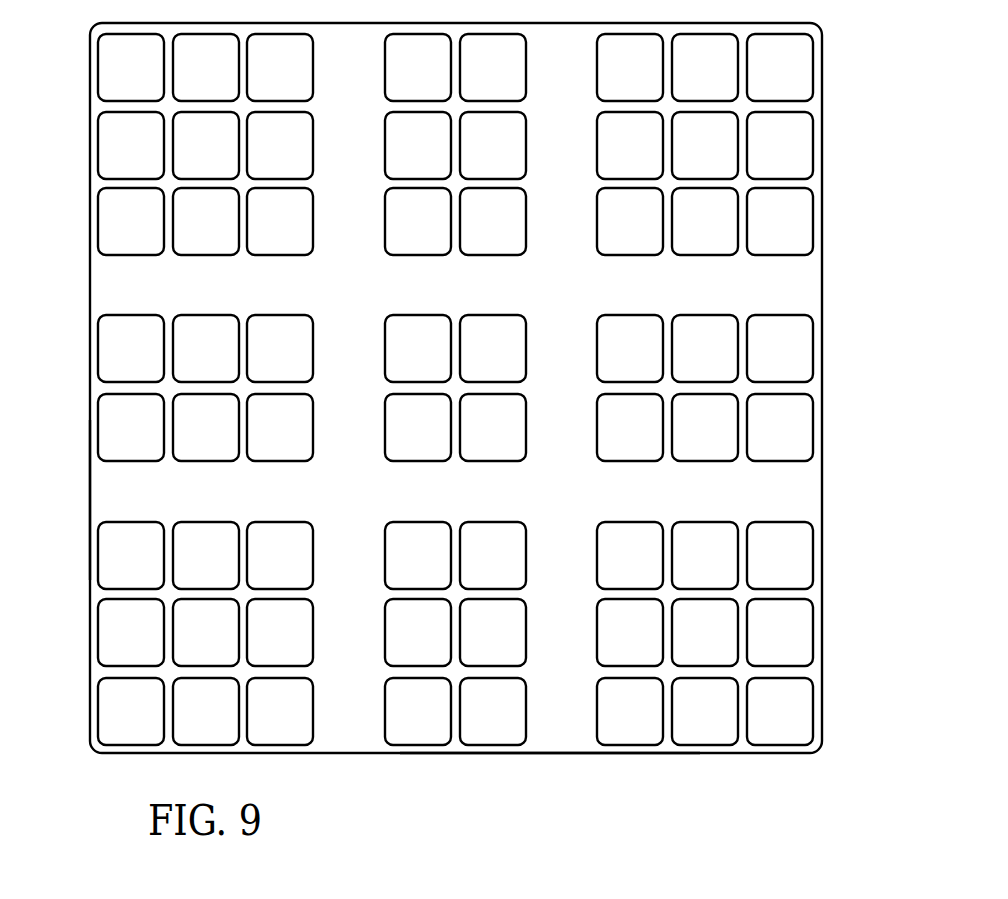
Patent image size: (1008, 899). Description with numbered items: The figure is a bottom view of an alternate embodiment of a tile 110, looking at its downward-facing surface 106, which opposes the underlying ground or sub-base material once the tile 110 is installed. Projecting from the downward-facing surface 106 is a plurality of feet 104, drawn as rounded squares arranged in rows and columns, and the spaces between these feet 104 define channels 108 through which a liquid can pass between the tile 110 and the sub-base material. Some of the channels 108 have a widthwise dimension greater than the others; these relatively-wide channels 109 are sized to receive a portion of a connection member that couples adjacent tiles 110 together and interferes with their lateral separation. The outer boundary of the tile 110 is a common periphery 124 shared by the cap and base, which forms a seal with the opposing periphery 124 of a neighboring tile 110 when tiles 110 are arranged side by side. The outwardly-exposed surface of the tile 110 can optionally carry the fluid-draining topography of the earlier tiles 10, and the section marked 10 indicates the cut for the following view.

The tiles 10 is at (77, 712).
The feet 104 is at (780, 335).
The downward-facing surface 106 is at (372, 300).
The channels 108 is at (810, 593).
The relatively-wide channels 109 is at (117, 494).
The tile 110 is at (754, 810).
The common periphery 124 is at (520, 753).